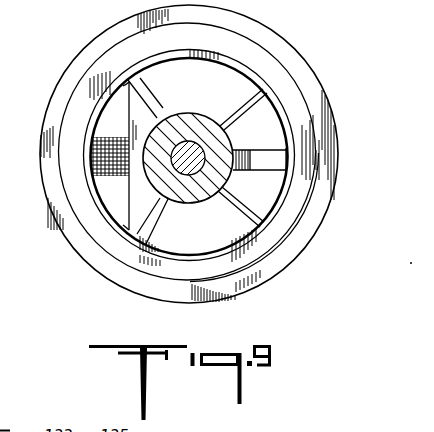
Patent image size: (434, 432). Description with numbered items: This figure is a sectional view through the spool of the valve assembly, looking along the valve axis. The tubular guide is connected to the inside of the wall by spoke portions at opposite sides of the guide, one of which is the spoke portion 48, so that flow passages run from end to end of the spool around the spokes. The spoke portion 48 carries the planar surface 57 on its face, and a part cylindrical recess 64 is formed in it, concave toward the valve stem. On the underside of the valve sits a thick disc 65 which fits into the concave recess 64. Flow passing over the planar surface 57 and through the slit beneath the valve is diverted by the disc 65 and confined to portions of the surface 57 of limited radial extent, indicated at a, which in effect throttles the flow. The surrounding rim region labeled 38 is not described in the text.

The wheel rim 38 is at (252, 75).
The planar surface 57 is at (131, 198).
The thick disc 65 is at (194, 113).
The part cylindrical recess 64 is at (177, 201).
The spoke portion 48 is at (146, 234).
The limited radial extent a is at (139, 82).